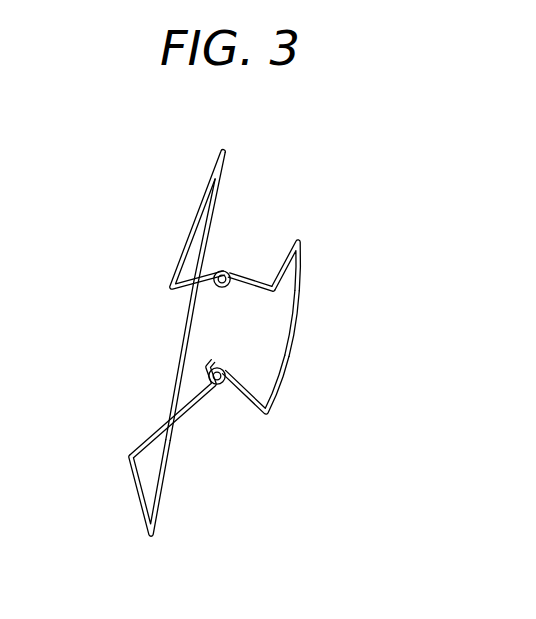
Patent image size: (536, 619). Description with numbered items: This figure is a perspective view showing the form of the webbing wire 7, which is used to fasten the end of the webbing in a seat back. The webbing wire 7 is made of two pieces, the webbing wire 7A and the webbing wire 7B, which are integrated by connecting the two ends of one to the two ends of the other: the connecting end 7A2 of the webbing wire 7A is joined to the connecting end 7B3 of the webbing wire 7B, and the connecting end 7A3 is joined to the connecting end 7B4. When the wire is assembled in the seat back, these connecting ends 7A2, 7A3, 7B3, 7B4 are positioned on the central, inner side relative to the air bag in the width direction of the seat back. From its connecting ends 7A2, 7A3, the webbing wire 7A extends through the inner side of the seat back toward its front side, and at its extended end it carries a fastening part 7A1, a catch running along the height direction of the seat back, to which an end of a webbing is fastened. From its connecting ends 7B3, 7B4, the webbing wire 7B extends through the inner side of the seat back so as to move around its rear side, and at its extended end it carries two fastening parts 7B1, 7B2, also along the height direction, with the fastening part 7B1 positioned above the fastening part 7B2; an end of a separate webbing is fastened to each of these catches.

The webbing wire 7 is at (306, 186).
The webbing wire 7A is at (150, 438).
The fastening part 7A1 is at (175, 342).
The connecting end 7A2 is at (217, 262).
The connecting end 7A3 is at (207, 362).
The webbing wire 7B is at (294, 336).
The fastening part 7B1 is at (298, 297).
The fastening part 7B2 is at (284, 370).
The connecting end 7B3 is at (226, 287).
The connecting end 7B4 is at (227, 386).